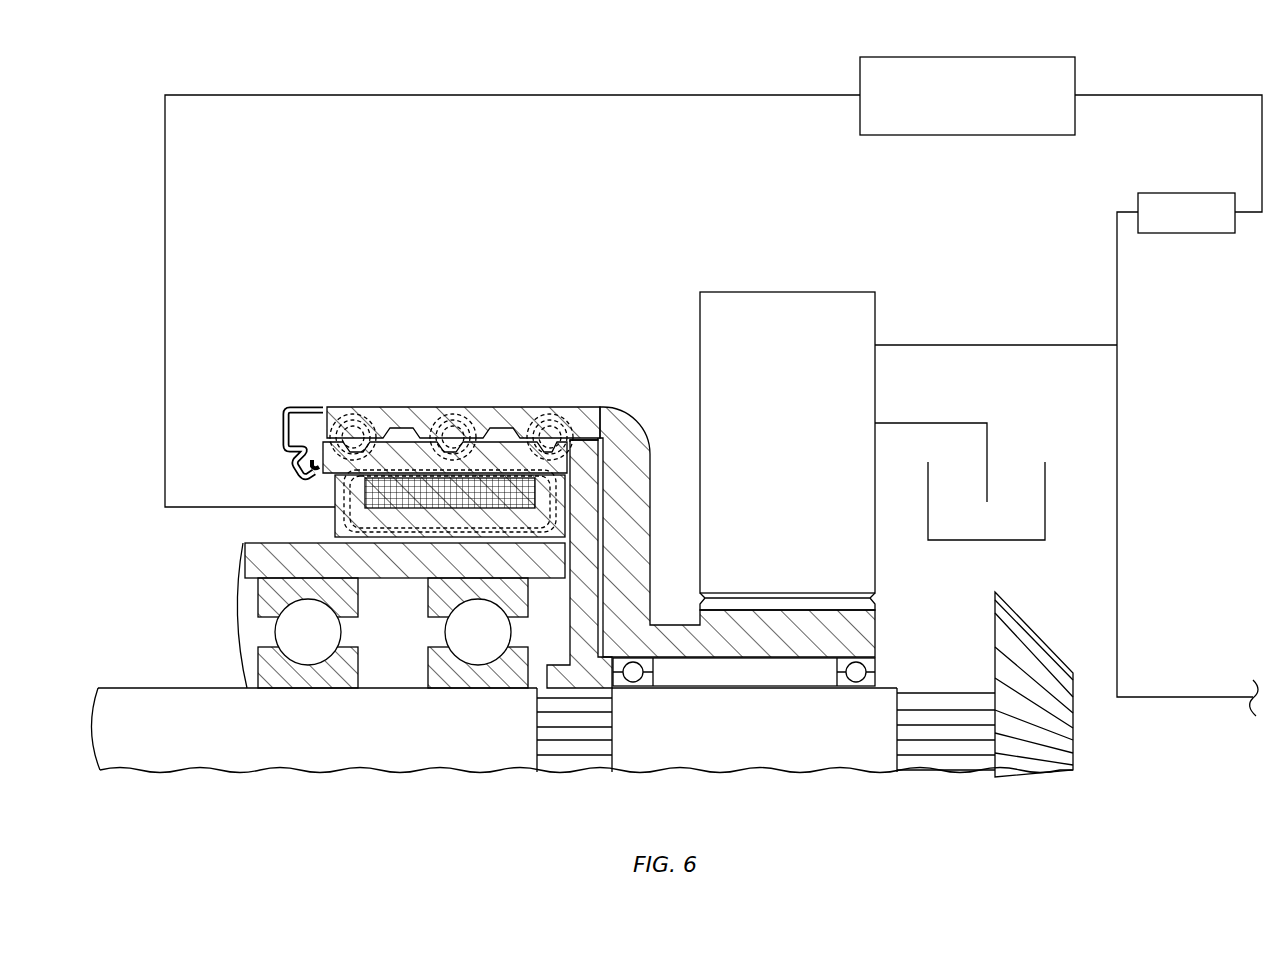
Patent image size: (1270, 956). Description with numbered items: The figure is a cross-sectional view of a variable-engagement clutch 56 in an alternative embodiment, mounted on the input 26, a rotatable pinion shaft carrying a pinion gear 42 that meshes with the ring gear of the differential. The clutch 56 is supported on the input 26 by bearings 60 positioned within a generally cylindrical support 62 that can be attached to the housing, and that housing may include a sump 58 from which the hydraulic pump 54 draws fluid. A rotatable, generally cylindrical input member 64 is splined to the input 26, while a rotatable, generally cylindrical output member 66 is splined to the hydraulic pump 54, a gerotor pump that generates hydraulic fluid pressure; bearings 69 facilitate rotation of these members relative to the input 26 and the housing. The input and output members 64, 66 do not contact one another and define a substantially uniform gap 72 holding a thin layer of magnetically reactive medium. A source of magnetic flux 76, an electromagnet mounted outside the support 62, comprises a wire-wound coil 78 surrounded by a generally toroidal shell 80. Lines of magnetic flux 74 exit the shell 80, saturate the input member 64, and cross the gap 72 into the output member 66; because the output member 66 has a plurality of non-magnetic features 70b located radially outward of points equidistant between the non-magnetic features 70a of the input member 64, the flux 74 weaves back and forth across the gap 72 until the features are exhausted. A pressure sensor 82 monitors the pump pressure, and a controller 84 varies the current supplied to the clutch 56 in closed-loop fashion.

The input 26 is at (310, 743).
The pinion gear 42 is at (1033, 660).
The hydraulic pump 54 is at (777, 452).
The variable-engagement clutch 56 is at (431, 416).
The sump 58 is at (1027, 543).
The bearings 60 is at (433, 667).
The support 62 is at (250, 568).
The input member 64 is at (590, 540).
The output member 66 is at (635, 452).
The bearings 69 is at (880, 660).
The non-magnetic features 70a is at (547, 440).
The non-magnetic features 70b is at (400, 417).
The gap 72 is at (590, 437).
The lines of magnetic flux 74 is at (453, 420).
The source of magnetic flux 76 is at (326, 527).
The wire-wound coil 78 is at (430, 437).
The toroidal shell 80 is at (335, 500).
The pressure sensor 82 is at (1163, 200).
The controller 84 is at (886, 62).